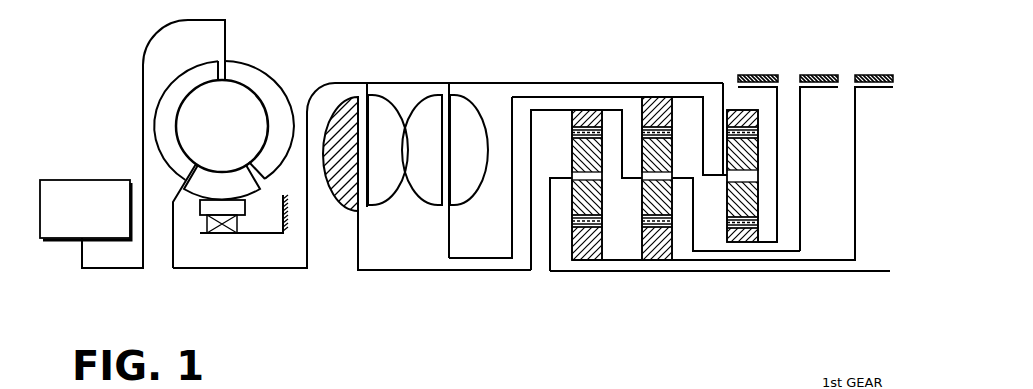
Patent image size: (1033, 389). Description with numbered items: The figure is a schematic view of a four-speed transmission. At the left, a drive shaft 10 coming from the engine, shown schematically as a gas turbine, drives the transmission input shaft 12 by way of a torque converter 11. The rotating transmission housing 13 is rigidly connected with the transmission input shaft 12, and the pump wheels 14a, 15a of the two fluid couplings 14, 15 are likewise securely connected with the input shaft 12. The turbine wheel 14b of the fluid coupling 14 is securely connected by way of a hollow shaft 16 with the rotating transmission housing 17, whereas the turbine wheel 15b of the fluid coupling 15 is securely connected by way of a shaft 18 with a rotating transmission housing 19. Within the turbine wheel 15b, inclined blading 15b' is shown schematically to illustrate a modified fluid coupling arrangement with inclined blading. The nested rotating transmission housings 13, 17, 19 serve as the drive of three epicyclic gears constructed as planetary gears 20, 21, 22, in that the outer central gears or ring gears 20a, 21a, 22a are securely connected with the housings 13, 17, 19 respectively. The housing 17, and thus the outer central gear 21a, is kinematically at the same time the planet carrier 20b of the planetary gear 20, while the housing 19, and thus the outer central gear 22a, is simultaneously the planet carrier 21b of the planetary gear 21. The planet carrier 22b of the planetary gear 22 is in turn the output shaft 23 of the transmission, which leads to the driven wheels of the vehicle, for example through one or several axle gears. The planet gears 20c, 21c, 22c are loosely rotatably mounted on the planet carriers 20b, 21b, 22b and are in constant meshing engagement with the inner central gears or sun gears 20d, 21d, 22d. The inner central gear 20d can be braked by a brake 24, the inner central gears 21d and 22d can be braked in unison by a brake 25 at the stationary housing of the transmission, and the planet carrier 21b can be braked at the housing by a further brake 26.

The drive shaft 10 is at (143, 270).
The torque converter 11 is at (266, 93).
The transmission input shaft 12 is at (228, 270).
The rotating transmission housing 13 is at (530, 83).
The fluid coupling 14 is at (448, 150).
The pump wheel 14a is at (437, 193).
The turbine wheel 14b is at (468, 187).
The fluid coupling 15 is at (363, 157).
The pump wheel 15a is at (382, 190).
The turbine wheel 15b is at (339, 161).
The inclined blading 15b' is at (338, 131).
The hollow shaft 16 is at (485, 271).
The rotating transmission housing 17 is at (575, 97).
The shaft 18 is at (402, 270).
The rotating transmission housing 19 is at (556, 110).
The planetary gear 20 is at (779, 174).
The outer central gear 20a is at (758, 118).
The planet carrier 20b is at (713, 172).
The planet gear 20c is at (743, 158).
The inner central gear 20d is at (748, 243).
The planetary gear 21 is at (717, 177).
The outer central gear 21a is at (653, 107).
The planet carrier 21b is at (634, 172).
The planet gear 21c is at (663, 140).
The inner central gear 21d is at (662, 262).
The planetary gear 22 is at (606, 184).
The outer central gear 22a is at (590, 112).
The planet carrier 22b is at (560, 178).
The planet gear 22c is at (590, 157).
The inner central gear 22d is at (588, 262).
The output shaft 23 is at (838, 271).
The brake 24 is at (763, 75).
The brake 25 is at (876, 74).
The brake 26 is at (826, 74).